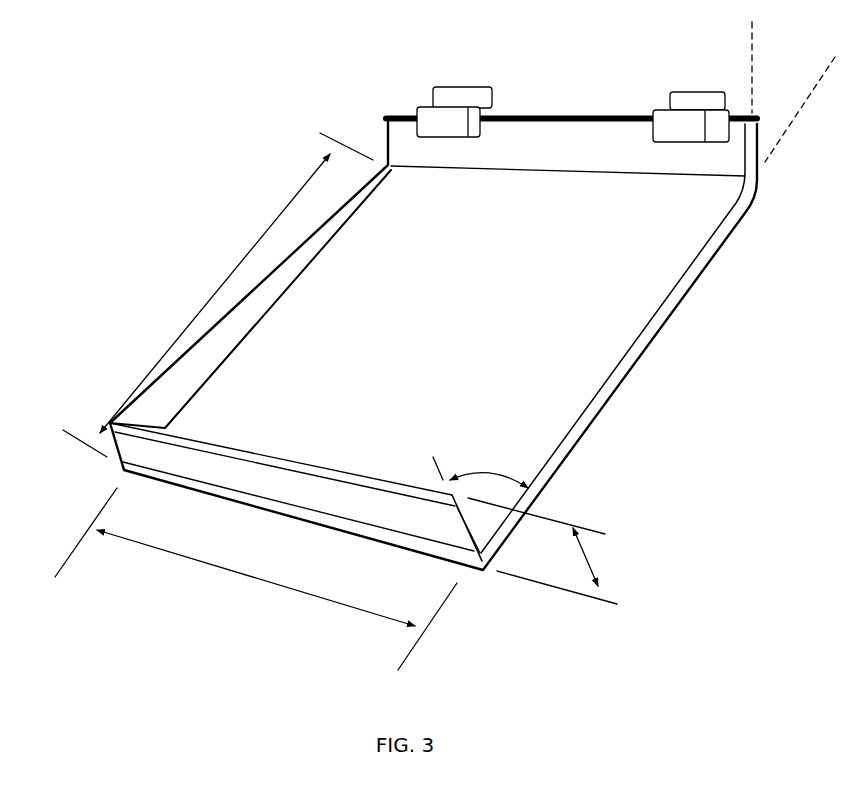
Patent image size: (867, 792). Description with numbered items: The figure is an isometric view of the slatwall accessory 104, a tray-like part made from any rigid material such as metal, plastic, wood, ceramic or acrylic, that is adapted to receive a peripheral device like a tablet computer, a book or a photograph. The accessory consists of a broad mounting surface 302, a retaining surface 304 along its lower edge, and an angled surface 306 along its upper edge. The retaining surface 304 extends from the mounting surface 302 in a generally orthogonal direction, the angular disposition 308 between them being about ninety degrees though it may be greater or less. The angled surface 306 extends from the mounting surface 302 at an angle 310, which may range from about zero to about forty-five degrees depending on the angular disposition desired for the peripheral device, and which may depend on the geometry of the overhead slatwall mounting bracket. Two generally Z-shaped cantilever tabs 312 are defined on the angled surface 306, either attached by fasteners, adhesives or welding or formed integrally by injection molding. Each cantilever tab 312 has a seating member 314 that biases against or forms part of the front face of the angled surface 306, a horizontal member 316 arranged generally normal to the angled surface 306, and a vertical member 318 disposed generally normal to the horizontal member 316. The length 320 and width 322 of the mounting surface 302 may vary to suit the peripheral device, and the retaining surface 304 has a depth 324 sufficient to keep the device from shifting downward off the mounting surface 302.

The slatwall accessory 104 is at (130, 147).
The mounting surface 302 is at (633, 307).
The retaining surface 304 is at (291, 461).
The angled surface 306 is at (552, 148).
The angular disposition 308 is at (493, 473).
The angle 310 is at (757, 73).
The cantilever tabs 312 is at (487, 87).
The seating member 314 is at (655, 133).
The horizontal member 316 is at (717, 122).
The vertical member 318 is at (730, 92).
The length 320 is at (220, 287).
The width 322 is at (250, 581).
The depth 324 is at (587, 560).